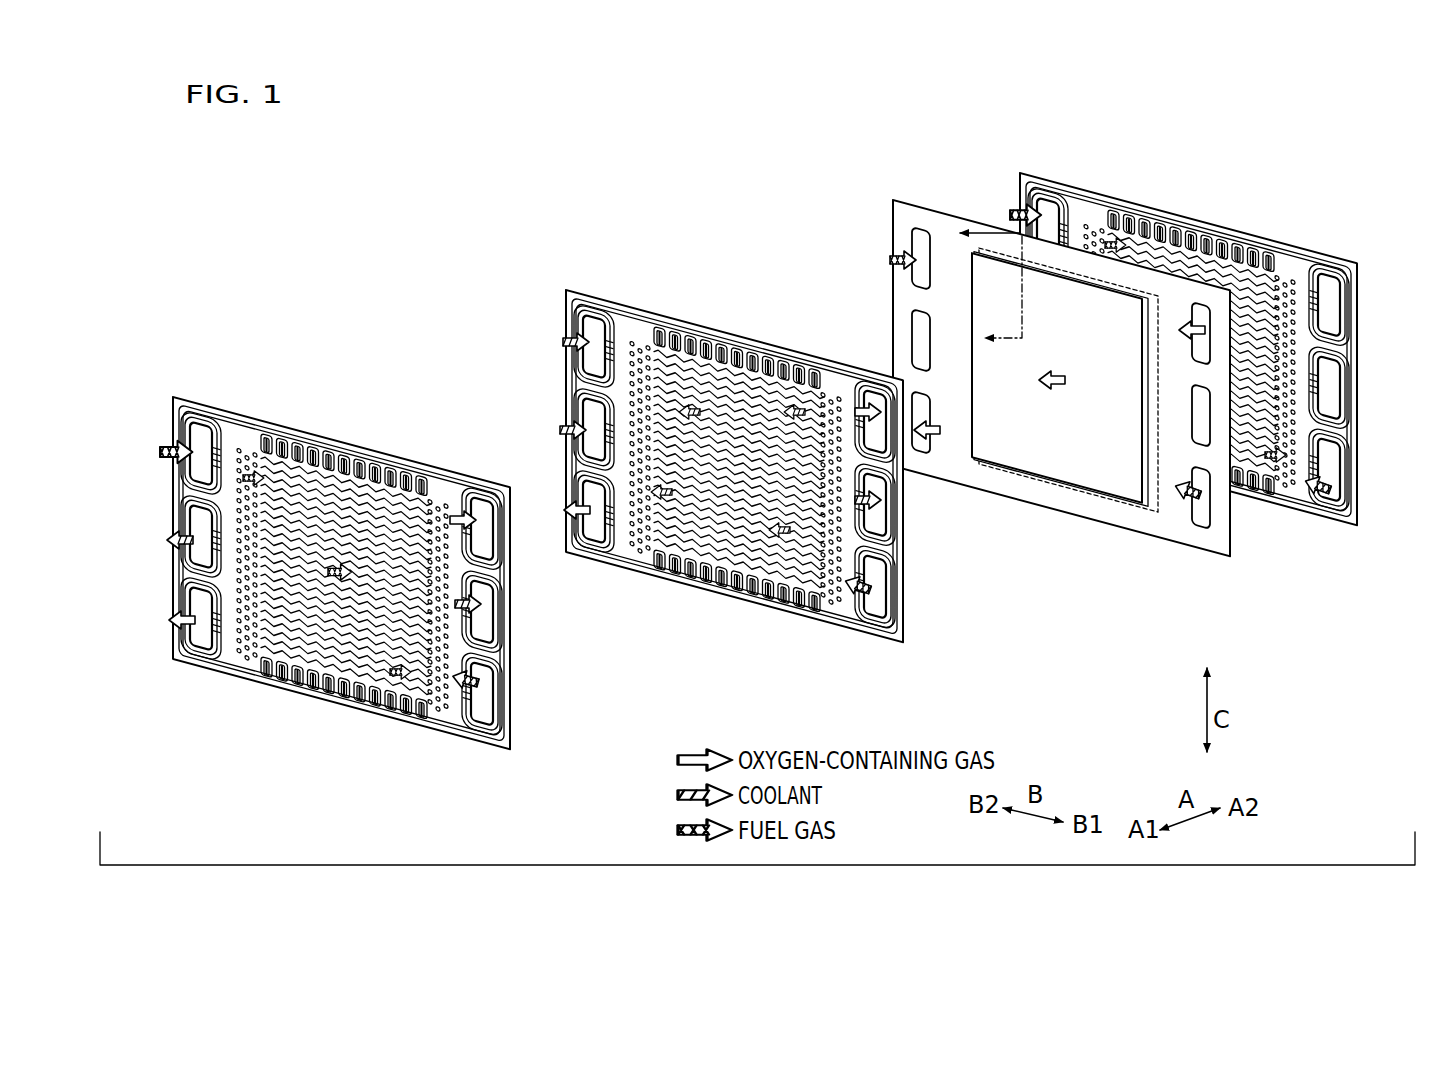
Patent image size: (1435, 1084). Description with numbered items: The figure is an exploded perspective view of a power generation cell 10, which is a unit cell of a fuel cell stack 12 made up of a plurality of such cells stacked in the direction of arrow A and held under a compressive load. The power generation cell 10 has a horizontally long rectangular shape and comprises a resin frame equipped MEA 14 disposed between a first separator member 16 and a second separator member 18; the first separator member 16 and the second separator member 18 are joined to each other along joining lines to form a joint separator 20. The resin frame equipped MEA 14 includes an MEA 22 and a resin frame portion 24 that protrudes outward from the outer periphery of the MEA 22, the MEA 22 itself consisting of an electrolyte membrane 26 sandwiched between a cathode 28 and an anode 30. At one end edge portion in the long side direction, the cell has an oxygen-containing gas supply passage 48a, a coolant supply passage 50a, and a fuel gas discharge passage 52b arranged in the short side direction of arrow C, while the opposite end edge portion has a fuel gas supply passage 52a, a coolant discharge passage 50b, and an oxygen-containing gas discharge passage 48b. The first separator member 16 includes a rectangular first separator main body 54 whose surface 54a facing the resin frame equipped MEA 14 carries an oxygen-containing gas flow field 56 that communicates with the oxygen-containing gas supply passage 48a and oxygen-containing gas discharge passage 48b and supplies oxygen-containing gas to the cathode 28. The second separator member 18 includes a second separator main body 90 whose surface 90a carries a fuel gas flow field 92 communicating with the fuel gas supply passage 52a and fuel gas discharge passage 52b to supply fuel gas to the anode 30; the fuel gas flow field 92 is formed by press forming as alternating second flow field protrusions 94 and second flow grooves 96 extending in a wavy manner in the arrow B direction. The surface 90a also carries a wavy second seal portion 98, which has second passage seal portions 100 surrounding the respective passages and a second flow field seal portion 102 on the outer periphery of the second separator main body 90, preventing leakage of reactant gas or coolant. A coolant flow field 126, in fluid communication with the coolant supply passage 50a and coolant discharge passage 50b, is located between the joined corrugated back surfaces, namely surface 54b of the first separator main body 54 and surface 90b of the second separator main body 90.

The power generation cell 10 is at (990, 133).
The fuel cell stack 12 is at (363, 132).
The resin frame equipped MEA 14 is at (1046, 376).
The first separator member 16 is at (567, 288).
The second separator member 18 is at (173, 395).
The joint separator 20 is at (1003, 122).
The membrane electrode assembly 22 is at (1092, 492).
The resin frame portion 24 is at (920, 222).
The electrolyte membrane 26 is at (1148, 493).
The cathode 28 is at (1030, 458).
The anode 30 is at (1148, 508).
The oxygen-containing gas supply passage 48a is at (478, 508).
The oxygen-containing gas discharge passage 48b is at (922, 437).
The coolant supply passage 50a is at (1320, 392).
The coolant discharge passage 50b is at (928, 322).
The fuel gas supply passage 52a is at (928, 243).
The fuel gas discharge passage 52b is at (1328, 462).
The first separator main body 54 is at (645, 305).
The surface of the first separator main body 54a is at (717, 592).
The surface of the first separator main body 54b is at (780, 590).
The oxygen-containing gas flow field 56 is at (722, 372).
The second separator main body 90 is at (1357, 260).
The surface of the second separator main body 90a is at (1240, 232).
The surface of the second separator main body 90b is at (1270, 235).
The fuel gas flow field 92 is at (1220, 153).
The second flow field protrusion 94 is at (1140, 222).
The second flow groove 96 is at (1178, 232).
The second seal portion 98 is at (1386, 565).
The second passage seal portion 100 is at (1048, 205).
The second flow field seal portion 102 is at (1328, 520).
The coolant flow field 126 is at (690, 372).